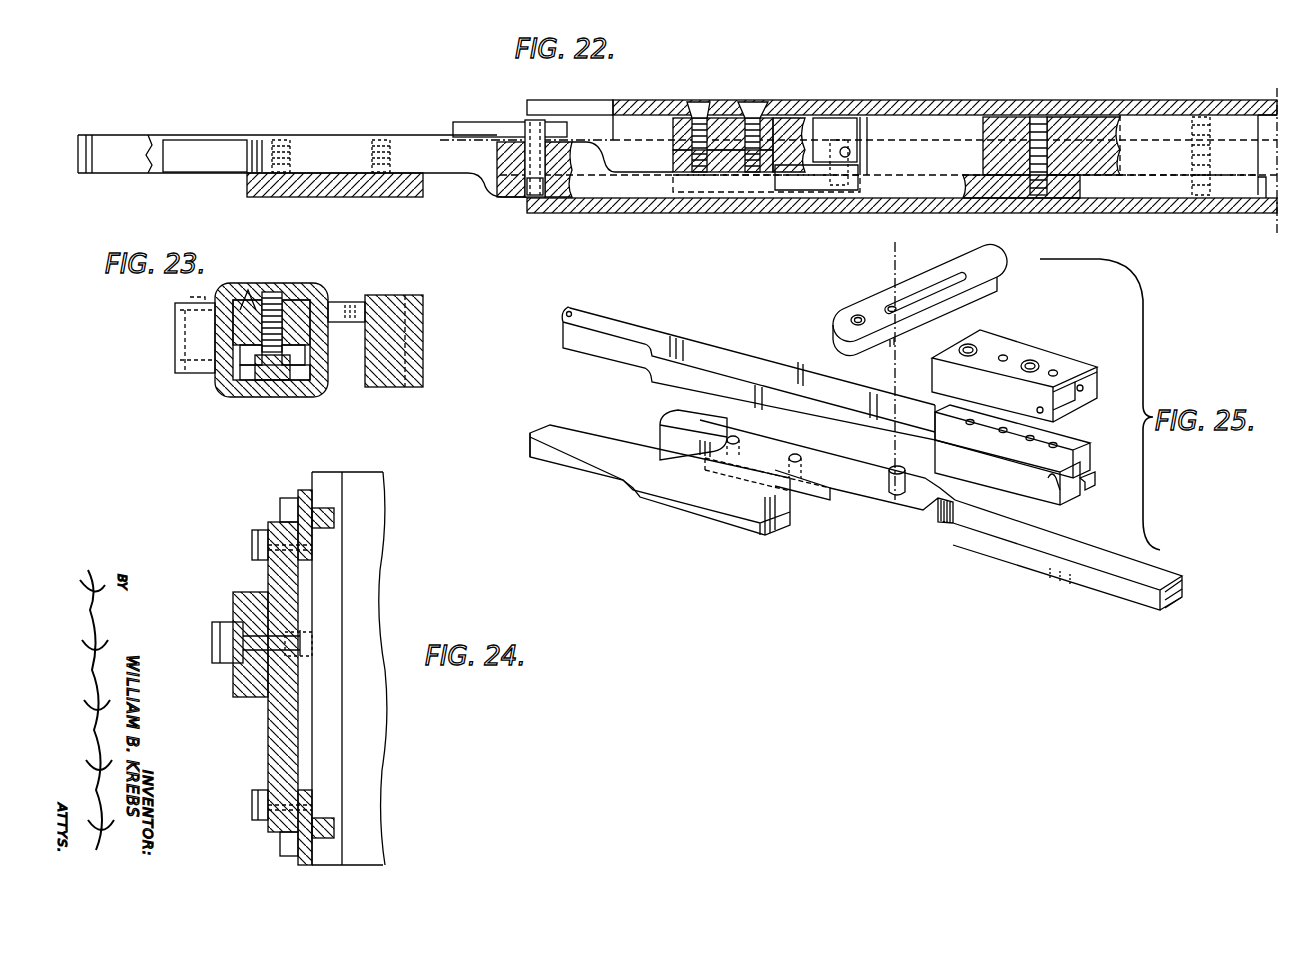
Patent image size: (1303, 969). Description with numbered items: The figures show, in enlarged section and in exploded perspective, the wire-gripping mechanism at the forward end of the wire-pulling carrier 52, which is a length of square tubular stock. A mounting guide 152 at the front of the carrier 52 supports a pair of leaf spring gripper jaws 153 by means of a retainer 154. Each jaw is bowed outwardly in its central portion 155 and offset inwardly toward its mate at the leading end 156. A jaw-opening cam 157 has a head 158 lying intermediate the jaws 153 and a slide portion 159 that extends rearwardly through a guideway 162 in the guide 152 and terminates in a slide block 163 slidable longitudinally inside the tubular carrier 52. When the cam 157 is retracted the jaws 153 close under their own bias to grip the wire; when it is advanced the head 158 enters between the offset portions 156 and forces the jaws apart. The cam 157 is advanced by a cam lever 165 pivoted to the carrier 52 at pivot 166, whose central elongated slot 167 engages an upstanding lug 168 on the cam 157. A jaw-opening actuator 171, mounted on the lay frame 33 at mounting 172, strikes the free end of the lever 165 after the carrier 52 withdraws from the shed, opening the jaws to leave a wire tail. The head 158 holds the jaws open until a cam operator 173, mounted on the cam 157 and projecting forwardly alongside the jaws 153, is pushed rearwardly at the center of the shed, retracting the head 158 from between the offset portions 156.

In FIG. 24, the lay frame 33 is at (378, 567).
In FIG. 22, the wire-pulling carrier 52 is at (925, 100).
In FIG. 23, the wire-pulling carrier 52 is at (215, 392).
In FIG. 22, the mounting guide 152 is at (680, 148).
In FIG. 23, the mounting guide 152 is at (300, 375).
In FIG. 25, the mounting guide 152 is at (1058, 492).
In FIG. 22, the leaf spring gripper jaws 153 is at (300, 137).
In FIG. 23, the leaf spring gripper jaws 153 is at (250, 292).
In FIG. 25, the leaf spring gripper jaws 153 is at (723, 360).
In FIG. 22, the retainer 154 is at (690, 125).
In FIG. 23, the retainer 154 is at (293, 305).
In FIG. 25, the retainer 154 is at (1030, 352).
In FIG. 25, the outwardly bowed central portion 155 is at (803, 375).
In FIG. 22, the inwardly offset leading end 156 is at (150, 140).
In FIG. 25, the inwardly offset leading end 156 is at (630, 328).
In FIG. 22, the jaw-opening cam 157 is at (345, 145).
In FIG. 25, the jaw-opening cam 157 is at (762, 448).
In FIG. 22, the cam head 158 is at (203, 148).
In FIG. 25, the cam head 158 is at (668, 420).
In FIG. 22, the slide portion 159 is at (920, 182).
In FIG. 23, the slide portion 159 is at (275, 385).
In FIG. 25, the slide portion 159 is at (1010, 550).
In FIG. 22, the guideway 162 is at (720, 175).
In FIG. 23, the guideway 162 is at (258, 380).
In FIG. 25, the guideway 162 is at (1090, 478).
In FIG. 22, the slide block 163 is at (1178, 160).
In FIG. 22, the cam lever 165 is at (462, 122).
In FIG. 23, the cam lever 165 is at (347, 302).
In FIG. 25, the cam lever 165 is at (965, 278).
In FIG. 23, the pivot of cam lever 166 is at (192, 298).
In FIG. 22, the elongated slot 167 is at (523, 128).
In FIG. 25, the elongated slot 167 is at (890, 300).
In FIG. 22, the upstanding lug 168 is at (528, 183).
In FIG. 25, the upstanding lug 168 is at (888, 468).
In FIG. 23, the jaw-opening actuator 171 is at (423, 330).
In FIG. 24, the jaw-opening actuator 171 is at (220, 622).
In FIG. 24, the actuator mounting 172 is at (240, 664).
In FIG. 22, the cam operator 173 is at (340, 190).
In FIG. 25, the cam operator 173 is at (603, 465).